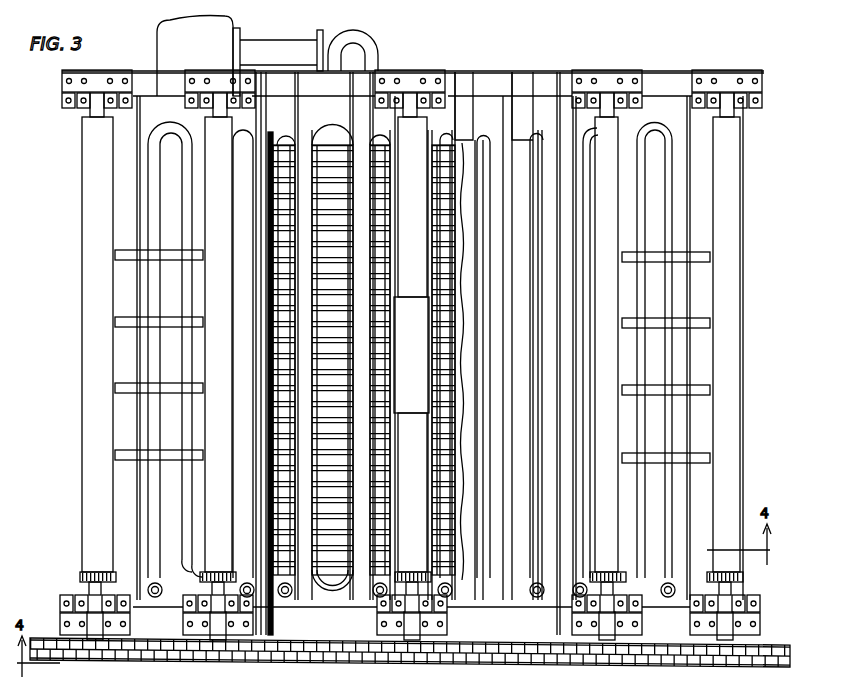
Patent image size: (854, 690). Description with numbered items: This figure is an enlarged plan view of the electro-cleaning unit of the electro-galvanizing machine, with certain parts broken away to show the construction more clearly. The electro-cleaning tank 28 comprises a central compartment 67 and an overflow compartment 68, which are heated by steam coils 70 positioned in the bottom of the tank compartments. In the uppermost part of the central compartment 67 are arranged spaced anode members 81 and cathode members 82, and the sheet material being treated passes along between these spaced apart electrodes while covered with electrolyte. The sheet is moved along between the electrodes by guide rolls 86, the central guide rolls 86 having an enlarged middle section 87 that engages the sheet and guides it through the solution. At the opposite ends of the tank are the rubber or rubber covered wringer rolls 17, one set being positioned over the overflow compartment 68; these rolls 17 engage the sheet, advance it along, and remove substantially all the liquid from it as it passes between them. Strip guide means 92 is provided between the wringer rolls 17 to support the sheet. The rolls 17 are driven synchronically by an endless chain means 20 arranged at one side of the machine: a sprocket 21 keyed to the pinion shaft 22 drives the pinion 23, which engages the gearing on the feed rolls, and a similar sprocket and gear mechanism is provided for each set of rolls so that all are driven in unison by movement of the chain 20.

The rolls 17 is at (411, 344).
The endless chain means 20 is at (530, 658).
The sprocket 21 is at (420, 660).
The pinion shaft 22 is at (95, 590).
The pinion 23 is at (414, 572).
The electro-cleaning tank 28 is at (667, 66).
The central compartment 67 is at (518, 336).
The overflow compartment 68 is at (714, 510).
The steam coils 70 is at (538, 424).
The anode members 81 is at (455, 488).
The cathode members 82 is at (288, 487).
The guide rolls 86 is at (412, 492).
The enlarged middle section 87 is at (411, 265).
The strip guide means 92 is at (124, 262).